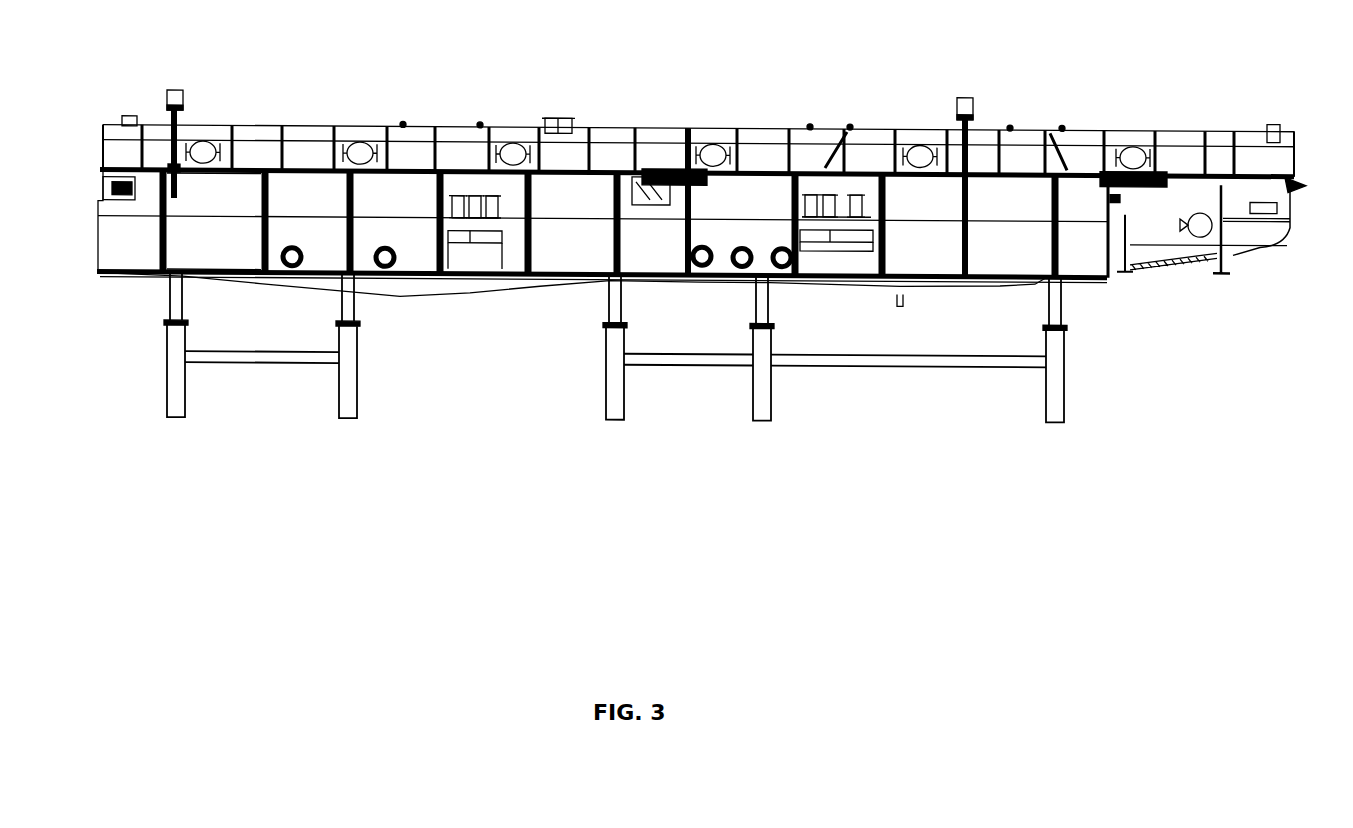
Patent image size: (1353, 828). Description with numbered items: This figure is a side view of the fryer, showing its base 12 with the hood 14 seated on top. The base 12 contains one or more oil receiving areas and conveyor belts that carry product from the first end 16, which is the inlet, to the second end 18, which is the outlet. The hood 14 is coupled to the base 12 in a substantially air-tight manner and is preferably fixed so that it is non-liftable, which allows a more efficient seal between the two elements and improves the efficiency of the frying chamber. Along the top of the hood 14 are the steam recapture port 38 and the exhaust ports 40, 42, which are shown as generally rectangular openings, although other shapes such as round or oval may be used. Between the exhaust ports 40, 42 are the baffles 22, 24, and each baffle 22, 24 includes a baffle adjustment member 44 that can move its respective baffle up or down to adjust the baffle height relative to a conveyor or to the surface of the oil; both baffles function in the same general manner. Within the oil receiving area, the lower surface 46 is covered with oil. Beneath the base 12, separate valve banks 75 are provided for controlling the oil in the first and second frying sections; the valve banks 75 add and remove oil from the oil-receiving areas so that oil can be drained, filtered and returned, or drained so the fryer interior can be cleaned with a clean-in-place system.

The base 12 is at (133, 247).
The hood 14 is at (300, 132).
The first end 16 is at (103, 158).
The second end 18 is at (1297, 157).
The baffle 22 is at (178, 182).
The baffle 24 is at (962, 190).
The steam recapture port 38 is at (553, 119).
The exhaust port 40 is at (131, 114).
The exhaust port 42 is at (1273, 122).
The baffle adjustment member 44 is at (171, 90).
The lower surface 46 is at (183, 217).
The valve bank 75 is at (487, 240).